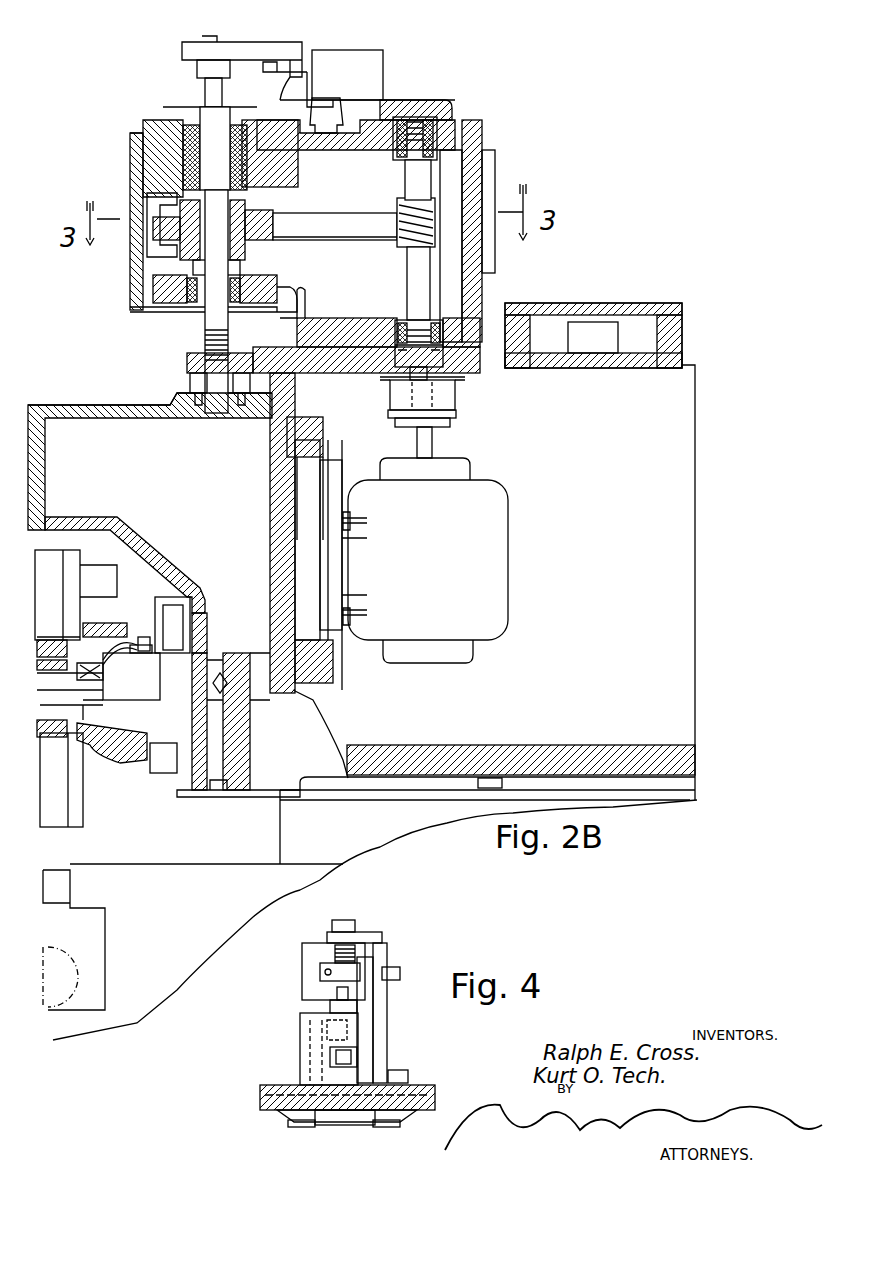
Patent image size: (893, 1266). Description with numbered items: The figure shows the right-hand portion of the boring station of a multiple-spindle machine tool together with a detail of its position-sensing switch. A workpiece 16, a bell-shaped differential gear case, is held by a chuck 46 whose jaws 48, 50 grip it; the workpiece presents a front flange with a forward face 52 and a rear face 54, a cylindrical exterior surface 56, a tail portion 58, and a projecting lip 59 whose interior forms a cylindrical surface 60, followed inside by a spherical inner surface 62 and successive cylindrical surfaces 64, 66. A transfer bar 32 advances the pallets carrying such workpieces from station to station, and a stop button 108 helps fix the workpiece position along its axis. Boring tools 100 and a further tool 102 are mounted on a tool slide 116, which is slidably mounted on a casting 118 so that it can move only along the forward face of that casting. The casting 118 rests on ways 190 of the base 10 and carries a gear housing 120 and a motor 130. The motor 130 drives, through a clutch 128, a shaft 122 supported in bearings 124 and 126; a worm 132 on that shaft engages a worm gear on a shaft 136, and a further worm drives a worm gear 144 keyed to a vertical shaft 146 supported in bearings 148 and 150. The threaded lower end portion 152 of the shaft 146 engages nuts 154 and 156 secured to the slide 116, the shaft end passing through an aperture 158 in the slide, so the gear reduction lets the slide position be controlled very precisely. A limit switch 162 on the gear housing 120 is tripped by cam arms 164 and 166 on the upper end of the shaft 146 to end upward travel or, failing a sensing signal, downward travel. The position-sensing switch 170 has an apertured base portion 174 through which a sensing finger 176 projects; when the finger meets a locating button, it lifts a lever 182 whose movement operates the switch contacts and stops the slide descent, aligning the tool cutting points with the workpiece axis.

In FIG. 2B, the base 10 is at (177, 973).
In FIG. 2B, the workpiece 16 is at (120, 630).
In FIG. 2B, the transfer bar 32 is at (63, 968).
In FIG. 2B, the chuck 46 is at (47, 552).
In FIG. 2B, the jaw 48 is at (87, 577).
In FIG. 2B, the jaw 50 is at (105, 792).
In FIG. 2B, the forward face 52 is at (130, 605).
In FIG. 2B, the rear face 54 is at (127, 605).
In FIG. 2B, the cylindrical exterior surface 56 is at (130, 767).
In FIG. 2B, the tail portion 58 is at (63, 710).
In FIG. 2B, the lip 59 is at (147, 637).
In FIG. 2B, the cylindrical surface 60 is at (150, 647).
In FIG. 2B, the spherical inner surface 62 is at (98, 765).
In FIG. 2B, the cylindrical surface 64 is at (97, 737).
In FIG. 2B, the cylindrical surface 66 is at (52, 647).
In FIG. 2B, the boring tool 100 is at (173, 692).
In FIG. 2B, the tool 102 is at (167, 770).
In FIG. 2B, the stop button 108 is at (60, 873).
In FIG. 2B, the tool slide 116 is at (190, 580).
In FIG. 2B, the casting 118 is at (395, 752).
In FIG. 2B, the gear housing 120 is at (472, 133).
In FIG. 2B, the shaft 122 is at (405, 180).
In FIG. 2B, the bearing 124 is at (458, 118).
In FIG. 2B, the bearing 126 is at (443, 328).
In FIG. 2B, the clutch 128 is at (455, 400).
In FIG. 2B, the motor 130 is at (443, 560).
In FIG. 2B, the worm 132 is at (395, 250).
In FIG. 2B, the shaft 136 is at (330, 232).
In FIG. 2B, the worm gear 144 is at (282, 207).
In FIG. 2B, the shaft 146 is at (210, 322).
In FIG. 2B, the bearing 148 is at (187, 180).
In FIG. 2B, the bearing 150 is at (200, 280).
In FIG. 2B, the threaded lower end portion 152 is at (205, 345).
In FIG. 2B, the nut 154 is at (190, 362).
In FIG. 2B, the nut 156 is at (190, 385).
In FIG. 2B, the aperture 158 is at (220, 410).
In FIG. 2B, the limit switch 162 is at (357, 57).
In FIG. 2B, the cam arm 164 is at (250, 43).
In FIG. 2B, the cam arm 166 is at (197, 68).
In FIG. 4, the position-sensing switch 170 is at (281, 1044).
In FIG. 4, the apertured base portion 174 is at (330, 1125).
In FIG. 4, the sensing finger 176 is at (348, 1125).
In FIG. 4, the lever 182 is at (355, 1057).
In FIG. 2B, the ways 190 is at (450, 795).